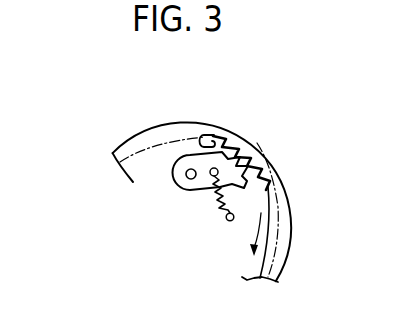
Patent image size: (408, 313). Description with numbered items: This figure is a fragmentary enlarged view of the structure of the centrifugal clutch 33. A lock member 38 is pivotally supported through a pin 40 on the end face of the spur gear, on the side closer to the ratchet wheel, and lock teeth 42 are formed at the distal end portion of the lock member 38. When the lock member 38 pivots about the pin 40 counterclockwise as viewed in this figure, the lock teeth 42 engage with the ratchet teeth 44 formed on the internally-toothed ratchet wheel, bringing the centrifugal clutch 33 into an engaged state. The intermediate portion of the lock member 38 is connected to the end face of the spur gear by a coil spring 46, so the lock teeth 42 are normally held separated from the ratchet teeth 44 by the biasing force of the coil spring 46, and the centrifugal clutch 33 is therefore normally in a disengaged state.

The centrifugal clutch 33 is at (172, 115).
The lock member 38 is at (202, 183).
The pin 40 is at (188, 180).
The lock teeth 42 is at (234, 156).
The ratchet teeth 44 is at (205, 134).
The coil spring 46 is at (232, 208).